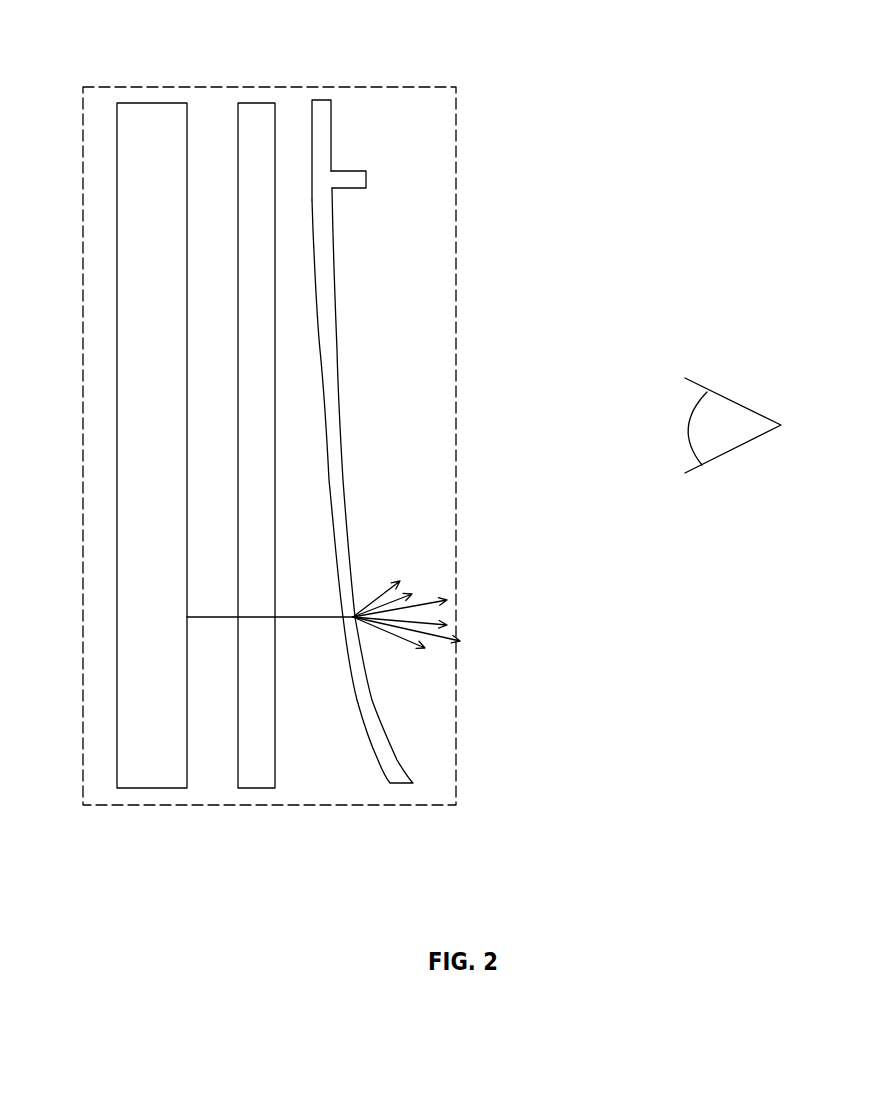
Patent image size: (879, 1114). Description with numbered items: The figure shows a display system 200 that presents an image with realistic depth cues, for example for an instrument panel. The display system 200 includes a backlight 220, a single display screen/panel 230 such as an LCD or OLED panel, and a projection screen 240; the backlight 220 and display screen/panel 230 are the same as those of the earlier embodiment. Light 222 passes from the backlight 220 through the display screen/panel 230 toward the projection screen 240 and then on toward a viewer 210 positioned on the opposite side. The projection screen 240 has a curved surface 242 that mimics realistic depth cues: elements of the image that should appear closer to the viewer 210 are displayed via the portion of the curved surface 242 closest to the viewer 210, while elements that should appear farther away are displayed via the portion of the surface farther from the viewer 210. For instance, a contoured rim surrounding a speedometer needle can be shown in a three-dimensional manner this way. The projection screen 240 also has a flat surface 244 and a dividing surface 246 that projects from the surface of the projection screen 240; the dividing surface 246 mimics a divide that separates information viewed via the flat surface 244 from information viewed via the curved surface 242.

The display system 200 is at (105, 87).
The viewer 210 is at (727, 395).
The backlight 220 is at (138, 112).
The light ray 222 is at (287, 620).
The display screen/panel 230 is at (248, 107).
The projection screen 240 is at (374, 407).
The curved surface 242 is at (342, 447).
The flat surface 244 is at (331, 118).
The dividing surface 246 is at (366, 177).